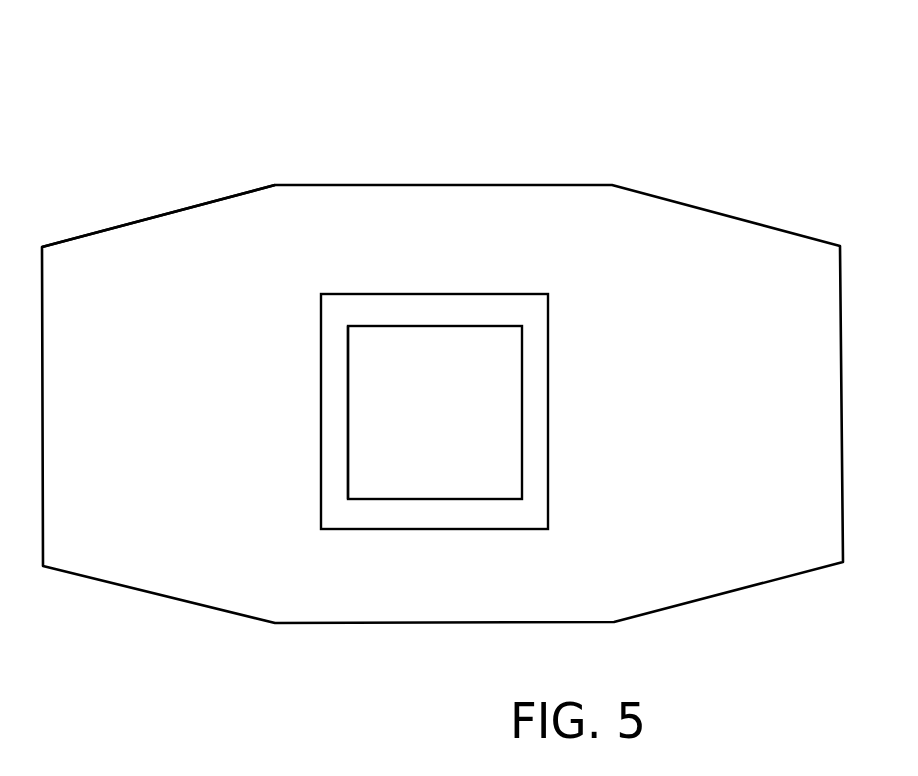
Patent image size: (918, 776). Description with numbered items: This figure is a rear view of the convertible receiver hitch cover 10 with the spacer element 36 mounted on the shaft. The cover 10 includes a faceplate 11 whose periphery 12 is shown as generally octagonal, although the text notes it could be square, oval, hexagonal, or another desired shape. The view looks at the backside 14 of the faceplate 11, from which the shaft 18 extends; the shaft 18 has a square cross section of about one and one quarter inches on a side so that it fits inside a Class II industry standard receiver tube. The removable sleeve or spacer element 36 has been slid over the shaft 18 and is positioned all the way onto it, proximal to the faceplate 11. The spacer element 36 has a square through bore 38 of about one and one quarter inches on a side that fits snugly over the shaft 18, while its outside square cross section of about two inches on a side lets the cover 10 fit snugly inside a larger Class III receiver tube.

The convertible receiver hitch cover 10 is at (442, 319).
The faceplate 11 is at (442, 360).
The periphery 12 is at (154, 215).
The backside 14 is at (171, 355).
The spacer element 36 is at (393, 300).
The shaft 18 is at (503, 363).
The through bore 38 is at (348, 449).